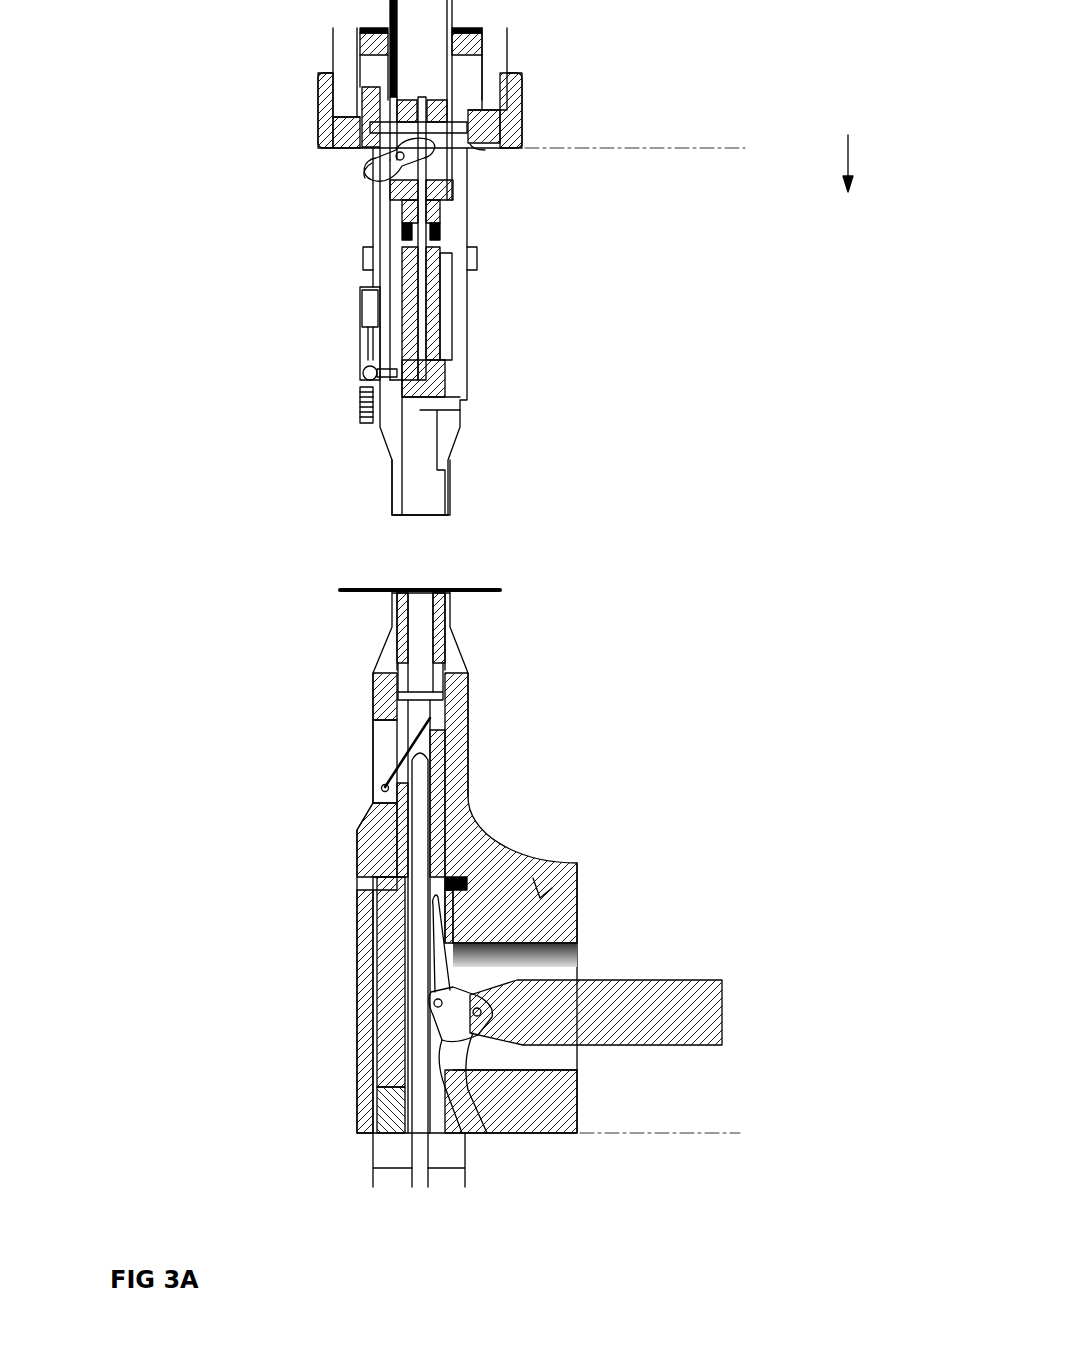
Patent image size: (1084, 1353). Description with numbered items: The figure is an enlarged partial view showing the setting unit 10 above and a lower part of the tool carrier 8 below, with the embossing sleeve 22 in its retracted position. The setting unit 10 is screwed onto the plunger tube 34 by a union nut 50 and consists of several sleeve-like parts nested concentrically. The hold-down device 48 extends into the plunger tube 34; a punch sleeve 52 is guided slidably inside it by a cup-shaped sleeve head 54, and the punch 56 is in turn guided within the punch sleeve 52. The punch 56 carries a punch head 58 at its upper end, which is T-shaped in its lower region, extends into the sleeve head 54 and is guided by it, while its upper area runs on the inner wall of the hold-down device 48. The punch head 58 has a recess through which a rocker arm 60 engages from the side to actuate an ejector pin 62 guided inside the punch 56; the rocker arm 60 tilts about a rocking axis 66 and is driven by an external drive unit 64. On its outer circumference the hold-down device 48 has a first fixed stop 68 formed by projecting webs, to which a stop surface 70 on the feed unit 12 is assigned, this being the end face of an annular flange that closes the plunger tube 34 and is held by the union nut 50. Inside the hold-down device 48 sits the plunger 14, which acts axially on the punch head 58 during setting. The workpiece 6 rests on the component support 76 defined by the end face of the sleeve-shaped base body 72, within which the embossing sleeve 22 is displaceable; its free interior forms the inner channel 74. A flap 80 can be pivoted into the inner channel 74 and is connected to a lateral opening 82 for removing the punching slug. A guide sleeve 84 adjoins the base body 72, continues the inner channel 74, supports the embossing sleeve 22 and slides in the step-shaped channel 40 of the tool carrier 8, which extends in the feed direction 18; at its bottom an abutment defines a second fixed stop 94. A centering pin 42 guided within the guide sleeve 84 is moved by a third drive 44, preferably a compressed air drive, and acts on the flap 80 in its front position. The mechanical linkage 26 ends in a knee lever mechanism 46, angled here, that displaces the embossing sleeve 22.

The workpiece 6 is at (492, 588).
The tool carrier 8 is at (562, 862).
The setting unit 10 is at (188, 265).
The feed unit 12 is at (712, 28).
The plunger 14 is at (415, 44).
The feed direction 18 is at (853, 152).
The embossing sleeve 22 is at (392, 610).
The mechanical linkage 26 is at (665, 1040).
The plunger tube 34 is at (493, 46).
The channel 40 is at (385, 850).
The centering pin 42 is at (420, 985).
The third drive 44 is at (395, 498).
The knee lever mechanism 46 is at (468, 1070).
The hold-down device 48 is at (467, 98).
The union nut 50 is at (497, 112).
The punch sleeve 52 is at (440, 385).
The sleeve head 54 is at (445, 238).
The punch 56 is at (445, 358).
The punch head 58 is at (445, 196).
The rocker arm 60 is at (372, 163).
The ejector pin 62 is at (410, 242).
The drive unit 64 is at (360, 350).
The rocking axis 66 is at (335, 134).
The first fixed stop 68 is at (477, 260).
The stop surface 70 is at (485, 150).
The base body 72 is at (445, 614).
The inner channel 74 is at (422, 657).
The component support 76 is at (440, 588).
The flap 80 is at (397, 748).
The lateral opening 82 is at (380, 765).
The guide sleeve 84 is at (435, 812).
The second fixed stop 94 is at (393, 915).